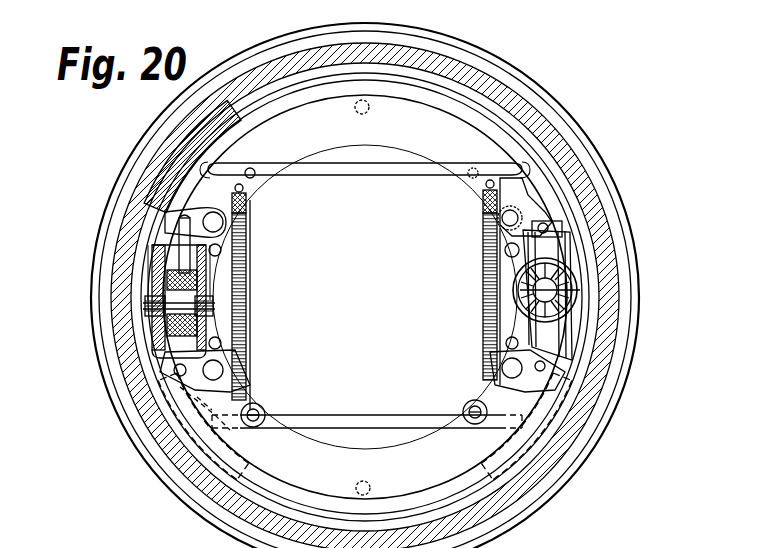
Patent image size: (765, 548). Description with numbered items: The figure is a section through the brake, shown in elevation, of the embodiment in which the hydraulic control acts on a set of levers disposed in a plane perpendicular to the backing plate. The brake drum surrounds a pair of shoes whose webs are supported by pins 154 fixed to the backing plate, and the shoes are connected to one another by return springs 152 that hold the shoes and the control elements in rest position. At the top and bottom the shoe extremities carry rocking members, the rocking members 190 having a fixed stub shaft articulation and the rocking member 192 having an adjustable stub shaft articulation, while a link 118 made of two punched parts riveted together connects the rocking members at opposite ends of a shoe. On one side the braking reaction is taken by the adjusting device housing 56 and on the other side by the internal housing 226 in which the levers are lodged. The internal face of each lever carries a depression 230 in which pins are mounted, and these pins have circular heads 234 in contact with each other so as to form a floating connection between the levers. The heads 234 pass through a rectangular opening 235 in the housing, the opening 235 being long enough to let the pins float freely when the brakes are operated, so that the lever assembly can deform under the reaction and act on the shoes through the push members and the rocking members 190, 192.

The adjusting device housing 56 is at (584, 293).
The link 118 is at (380, 170).
The return springs 152 is at (247, 266).
The pins 154 is at (372, 112).
The rocking members 190 is at (190, 192).
The rocking member 192 is at (520, 210).
The internal housing 226 is at (161, 252).
The depression 230 is at (167, 328).
The circular heads 234 is at (146, 308).
The rectangular opening 235 is at (208, 312).